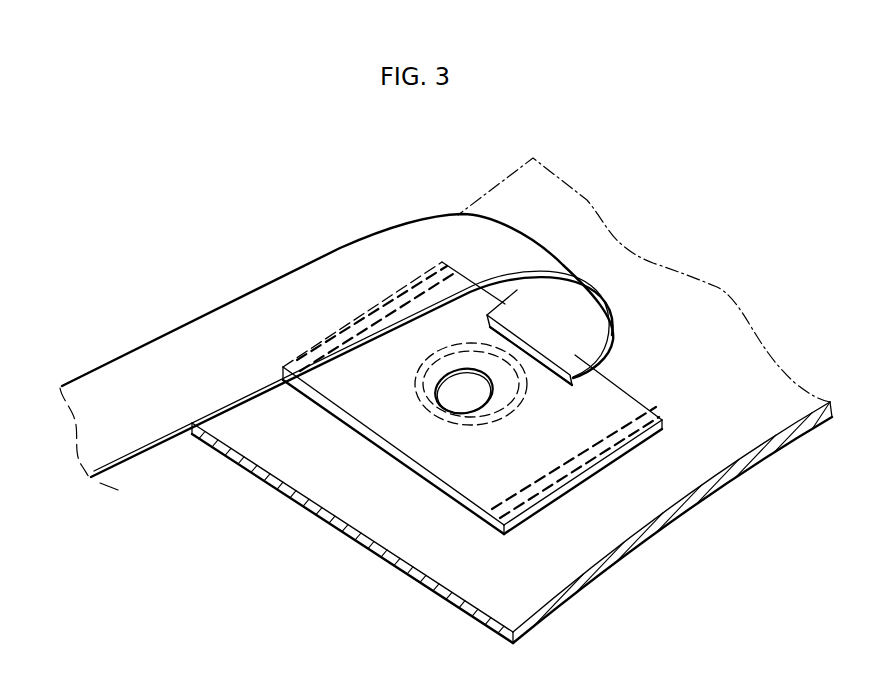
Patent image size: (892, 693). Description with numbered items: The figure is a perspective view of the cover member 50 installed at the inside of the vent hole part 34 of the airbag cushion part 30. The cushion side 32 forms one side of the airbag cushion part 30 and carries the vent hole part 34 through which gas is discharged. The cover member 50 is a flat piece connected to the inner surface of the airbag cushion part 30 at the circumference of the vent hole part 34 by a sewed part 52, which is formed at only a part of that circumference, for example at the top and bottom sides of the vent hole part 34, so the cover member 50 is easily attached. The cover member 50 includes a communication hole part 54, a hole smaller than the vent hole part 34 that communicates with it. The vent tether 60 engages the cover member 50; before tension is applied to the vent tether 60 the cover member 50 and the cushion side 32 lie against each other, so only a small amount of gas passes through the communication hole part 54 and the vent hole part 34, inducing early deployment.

The airbag cushion part 30 is at (677, 577).
The cushion side 32 is at (703, 447).
The vent hole part 34 is at (484, 425).
The cover member 50 is at (358, 406).
The sewed part 52 is at (628, 415).
The communication hole part 54 is at (444, 406).
The vent tether 60 is at (207, 342).